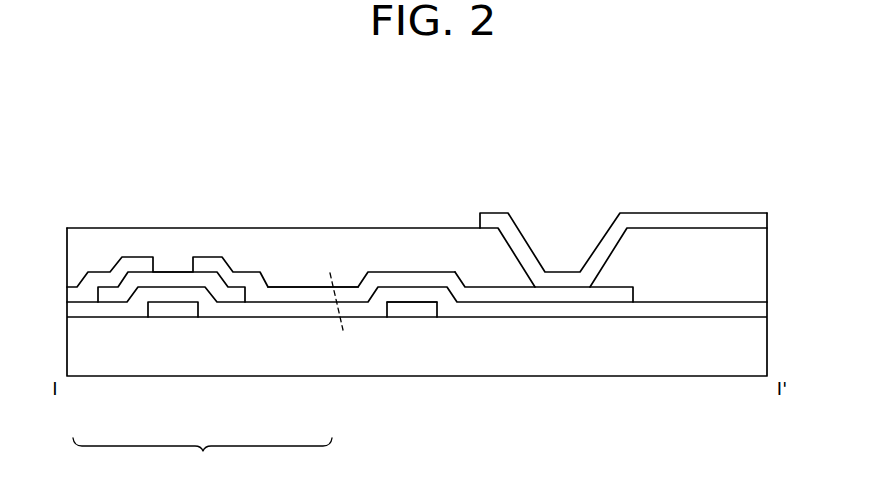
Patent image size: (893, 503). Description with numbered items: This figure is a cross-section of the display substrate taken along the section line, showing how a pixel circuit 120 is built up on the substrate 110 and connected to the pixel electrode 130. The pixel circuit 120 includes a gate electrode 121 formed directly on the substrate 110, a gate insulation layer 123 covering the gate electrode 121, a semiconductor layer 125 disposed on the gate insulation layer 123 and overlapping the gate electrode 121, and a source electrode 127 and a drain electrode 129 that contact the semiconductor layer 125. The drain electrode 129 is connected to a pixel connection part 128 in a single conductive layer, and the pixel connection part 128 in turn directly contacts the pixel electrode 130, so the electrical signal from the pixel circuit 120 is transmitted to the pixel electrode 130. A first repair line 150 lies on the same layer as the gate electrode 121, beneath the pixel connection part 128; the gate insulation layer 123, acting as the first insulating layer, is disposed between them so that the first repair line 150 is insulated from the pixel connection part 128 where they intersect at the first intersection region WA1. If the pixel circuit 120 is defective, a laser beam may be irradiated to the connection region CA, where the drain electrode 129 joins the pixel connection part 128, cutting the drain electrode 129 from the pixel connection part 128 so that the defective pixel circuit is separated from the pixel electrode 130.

The substrate 110 is at (732, 358).
The pixel circuit 120 is at (202, 456).
The gate electrode 121 is at (173, 310).
The gate insulation layer 123 is at (220, 310).
The semiconductor layer 125 is at (235, 296).
The source electrode 127 is at (92, 283).
The pixel connection part 128 is at (567, 297).
The drain electrode 129 is at (305, 293).
The pixel electrode 130 is at (670, 218).
The first repair line 150 is at (410, 310).
The connection region CA is at (337, 330).
The first intersection region WA1 is at (422, 303).